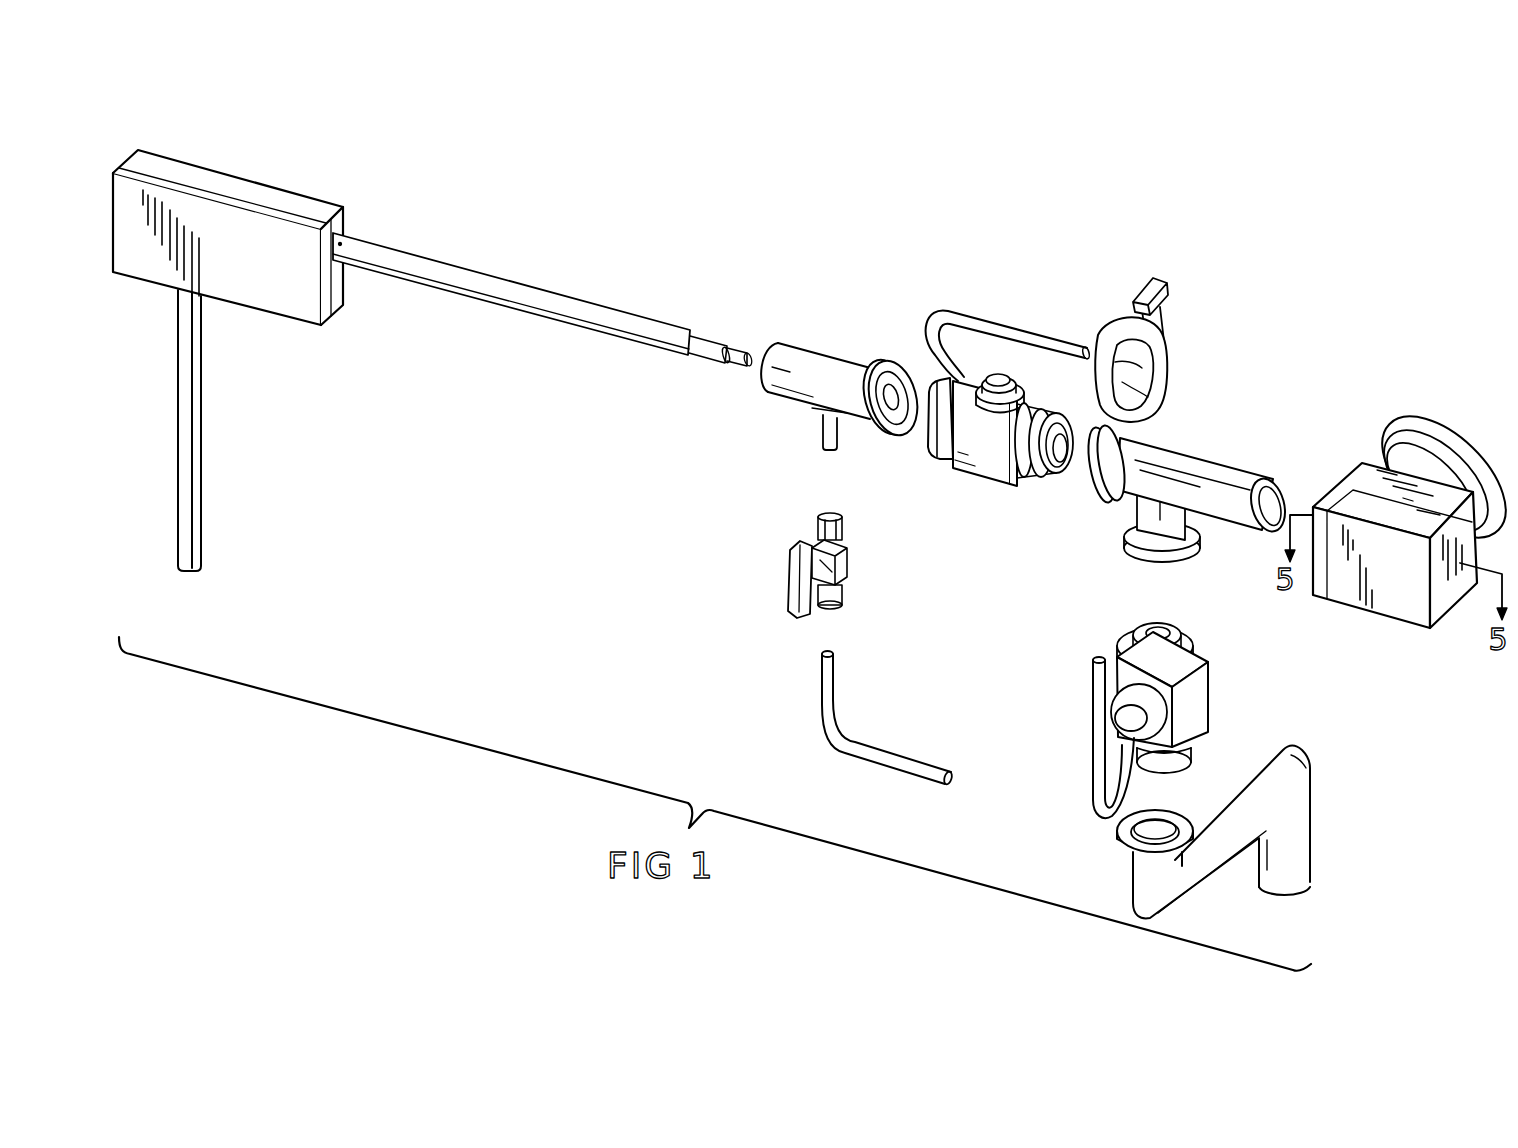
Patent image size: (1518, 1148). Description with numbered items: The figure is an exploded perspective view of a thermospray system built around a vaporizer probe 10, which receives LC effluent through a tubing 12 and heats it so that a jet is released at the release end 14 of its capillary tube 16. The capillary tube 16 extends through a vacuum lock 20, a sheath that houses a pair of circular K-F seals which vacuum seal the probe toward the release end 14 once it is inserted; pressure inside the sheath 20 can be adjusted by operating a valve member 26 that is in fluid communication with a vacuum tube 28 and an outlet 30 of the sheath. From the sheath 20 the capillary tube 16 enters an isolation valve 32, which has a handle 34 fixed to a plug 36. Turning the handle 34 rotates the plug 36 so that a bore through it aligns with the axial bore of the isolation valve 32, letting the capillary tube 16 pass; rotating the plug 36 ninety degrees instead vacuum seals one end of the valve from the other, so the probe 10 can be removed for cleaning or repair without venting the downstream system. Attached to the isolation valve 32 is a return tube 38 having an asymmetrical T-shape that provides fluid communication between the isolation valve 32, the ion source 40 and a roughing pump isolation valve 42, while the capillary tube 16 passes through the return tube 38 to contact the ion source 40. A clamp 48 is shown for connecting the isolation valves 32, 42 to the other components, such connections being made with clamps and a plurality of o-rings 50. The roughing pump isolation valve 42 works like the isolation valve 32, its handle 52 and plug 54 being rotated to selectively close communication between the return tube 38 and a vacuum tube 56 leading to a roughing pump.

The vaporizer probe 10 is at (383, 220).
The tubing 12 is at (203, 474).
The release end 14 is at (743, 350).
The capillary tube 16 is at (570, 312).
The vacuum lock 20 is at (818, 362).
The valve member 26 is at (846, 562).
The vacuum tube 28 is at (830, 718).
The outlet 30 is at (822, 448).
The isolation valve 32 is at (975, 492).
The handle 34 is at (977, 319).
The plug 36 is at (1000, 383).
The return tube 38 is at (1207, 468).
The ion source 40 is at (1402, 610).
The roughing pump isolation valve 42 is at (1200, 693).
The clamp 48 is at (1175, 322).
The o-rings 50 is at (1040, 472).
The handle 52 is at (1097, 757).
The plug 54 is at (1153, 733).
The vacuum tube 56 is at (1292, 817).